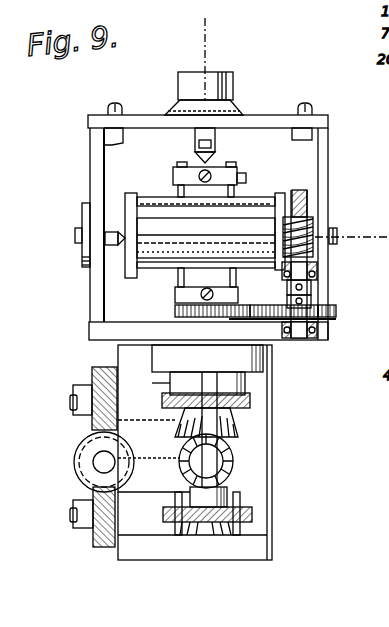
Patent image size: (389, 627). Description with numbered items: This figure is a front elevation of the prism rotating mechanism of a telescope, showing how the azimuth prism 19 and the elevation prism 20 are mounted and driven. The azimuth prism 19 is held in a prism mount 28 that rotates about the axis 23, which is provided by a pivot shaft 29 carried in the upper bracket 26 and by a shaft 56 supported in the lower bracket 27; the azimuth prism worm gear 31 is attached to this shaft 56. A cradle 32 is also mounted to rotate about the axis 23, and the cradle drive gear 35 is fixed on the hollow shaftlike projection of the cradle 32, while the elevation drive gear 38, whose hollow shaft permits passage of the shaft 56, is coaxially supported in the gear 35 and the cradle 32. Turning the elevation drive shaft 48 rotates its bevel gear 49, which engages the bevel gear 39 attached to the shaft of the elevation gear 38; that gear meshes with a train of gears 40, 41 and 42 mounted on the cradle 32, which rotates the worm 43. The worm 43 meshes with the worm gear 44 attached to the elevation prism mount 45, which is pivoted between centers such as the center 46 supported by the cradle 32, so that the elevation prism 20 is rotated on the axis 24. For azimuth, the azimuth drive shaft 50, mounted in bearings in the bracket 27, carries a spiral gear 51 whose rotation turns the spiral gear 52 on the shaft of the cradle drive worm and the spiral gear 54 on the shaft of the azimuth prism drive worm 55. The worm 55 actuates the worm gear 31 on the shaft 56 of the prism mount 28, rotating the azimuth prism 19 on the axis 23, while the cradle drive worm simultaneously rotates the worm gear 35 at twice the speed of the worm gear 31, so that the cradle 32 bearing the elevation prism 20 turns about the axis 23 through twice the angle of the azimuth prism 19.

The azimuth prism 19 is at (233, 193).
The elevation prism 20 is at (147, 253).
The axis 23 is at (203, 37).
The axis 24 is at (352, 252).
The bracket 26 is at (215, 82).
The bracket 27 is at (250, 555).
The prism mount 28 is at (172, 175).
The pivot shaft 29 is at (218, 160).
The azimuth prism worm gear 31 is at (252, 520).
The cradle 32 is at (323, 137).
The cradle drive gear 35 is at (252, 400).
The elevation drive gear 38 is at (175, 310).
The bevel gear 39 is at (235, 428).
The gear 40 is at (251, 300).
The gear 41 is at (339, 302).
The gear 42 is at (331, 315).
The worm 43 is at (310, 222).
The worm gear 44 is at (307, 200).
The elevation prism mount 45 is at (125, 200).
The center 46 is at (112, 232).
The elevation drive shaft 48 is at (232, 450).
The bevel gear 49 is at (220, 465).
The azimuth drive shaft 50 is at (97, 463).
The spiral gear 51 is at (80, 446).
The spiral gear 52 is at (92, 372).
The spiral gear 54 is at (102, 538).
The azimuth prism drive worm 55 is at (228, 500).
The shaft 56 is at (200, 465).